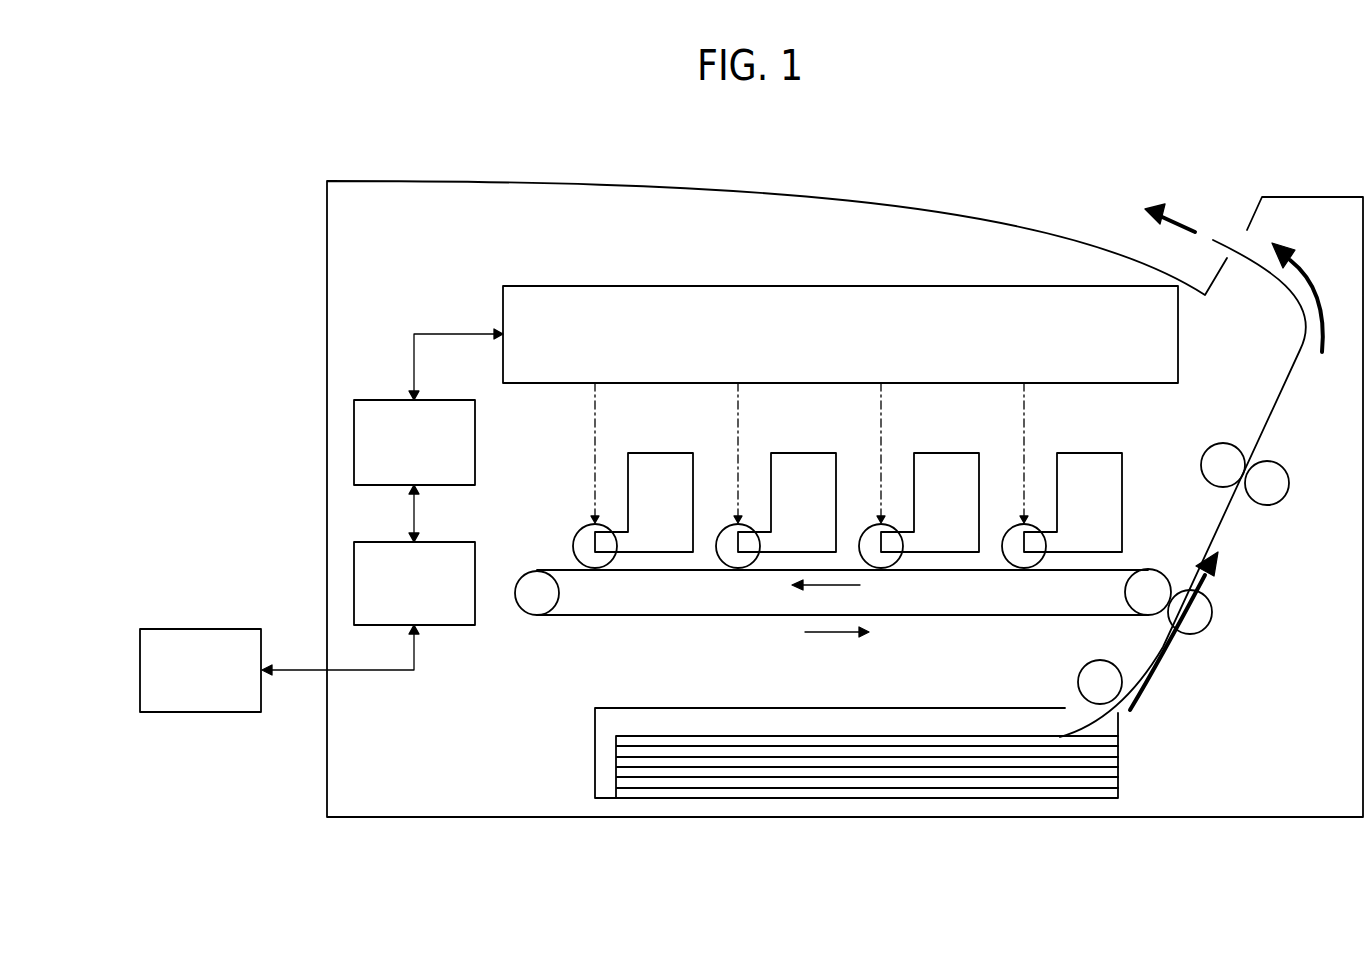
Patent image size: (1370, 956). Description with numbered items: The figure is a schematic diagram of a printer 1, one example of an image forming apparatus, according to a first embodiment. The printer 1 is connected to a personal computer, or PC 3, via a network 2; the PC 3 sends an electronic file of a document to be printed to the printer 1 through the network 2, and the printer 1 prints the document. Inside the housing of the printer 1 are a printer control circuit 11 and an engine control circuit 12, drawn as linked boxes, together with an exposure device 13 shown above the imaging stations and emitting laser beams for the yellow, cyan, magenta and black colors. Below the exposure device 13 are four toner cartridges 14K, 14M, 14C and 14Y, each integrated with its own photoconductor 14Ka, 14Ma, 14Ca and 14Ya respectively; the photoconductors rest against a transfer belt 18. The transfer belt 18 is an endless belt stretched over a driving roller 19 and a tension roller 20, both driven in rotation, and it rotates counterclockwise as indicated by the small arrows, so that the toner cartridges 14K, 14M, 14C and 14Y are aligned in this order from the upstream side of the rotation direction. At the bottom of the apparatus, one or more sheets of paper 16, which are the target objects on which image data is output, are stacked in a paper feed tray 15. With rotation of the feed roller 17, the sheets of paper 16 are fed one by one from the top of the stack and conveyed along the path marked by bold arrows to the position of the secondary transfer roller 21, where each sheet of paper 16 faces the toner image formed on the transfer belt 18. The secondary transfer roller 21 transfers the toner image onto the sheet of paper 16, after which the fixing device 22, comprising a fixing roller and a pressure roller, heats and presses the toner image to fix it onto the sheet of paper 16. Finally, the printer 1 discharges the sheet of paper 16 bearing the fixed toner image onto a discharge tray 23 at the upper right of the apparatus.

The printer 1 is at (650, 180).
The network 2 is at (301, 672).
The personal computer (PC) 3 is at (241, 628).
The printer control circuit 11 is at (451, 540).
The engine control circuit 12 is at (450, 398).
The exposure device 13 is at (502, 312).
The toner cartridge 14Y is at (658, 452).
The photoconductor 14Ya is at (582, 528).
The toner cartridge 14C is at (801, 452).
The photoconductor 14Ca is at (724, 525).
The toner cartridge 14M is at (950, 452).
The photoconductor 14Ma is at (866, 525).
The toner cartridge 14K is at (1093, 452).
The photoconductor 14Ka is at (1009, 525).
The paper feed tray 15 is at (594, 731).
The sheet of paper 16 is at (646, 752).
The feed roller 17 is at (1079, 688).
The transfer belt 18 is at (697, 618).
The driving roller 19 is at (1160, 570).
The tension roller 20 is at (526, 575).
The secondary transfer roller 21 is at (1213, 617).
The fixing device 22 is at (1255, 460).
The discharge tray 23 is at (1237, 238).